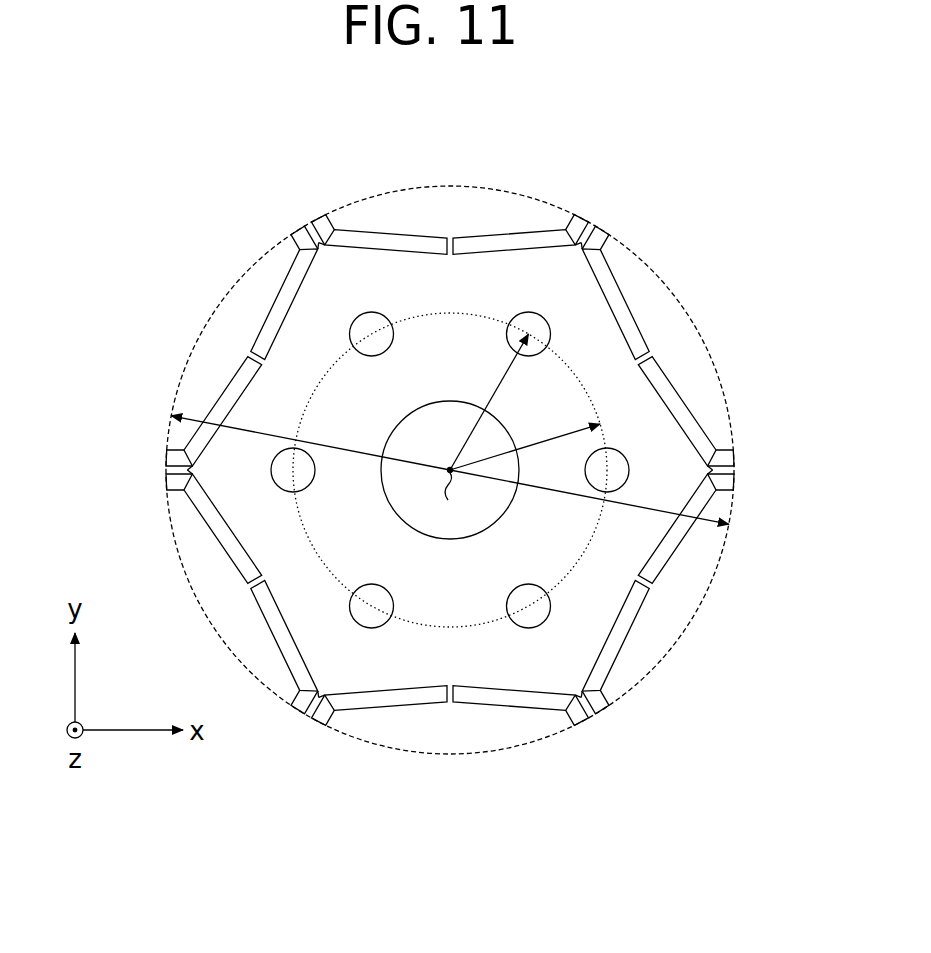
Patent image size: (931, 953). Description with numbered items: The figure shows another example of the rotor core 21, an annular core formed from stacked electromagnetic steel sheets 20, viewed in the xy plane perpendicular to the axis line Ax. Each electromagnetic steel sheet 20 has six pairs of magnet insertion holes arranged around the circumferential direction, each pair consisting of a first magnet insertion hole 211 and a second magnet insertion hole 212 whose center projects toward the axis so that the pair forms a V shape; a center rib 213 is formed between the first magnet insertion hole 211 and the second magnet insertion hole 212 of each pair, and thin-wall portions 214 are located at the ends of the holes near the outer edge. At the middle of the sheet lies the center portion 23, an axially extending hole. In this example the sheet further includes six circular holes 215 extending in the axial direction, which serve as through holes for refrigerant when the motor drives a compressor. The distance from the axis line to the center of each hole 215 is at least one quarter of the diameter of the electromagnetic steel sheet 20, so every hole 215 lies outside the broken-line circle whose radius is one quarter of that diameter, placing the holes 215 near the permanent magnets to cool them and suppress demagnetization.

The electromagnetic steel sheet 20 is at (197, 398).
The rotor core 21 is at (163, 228).
The center portion 23 is at (512, 466).
The first magnet insertion hole 211 is at (418, 248).
The second magnet insertion hole 212 is at (480, 248).
The center rib 213 is at (450, 238).
The thin-wall portion 214 is at (313, 216).
The hole 215 is at (365, 322).